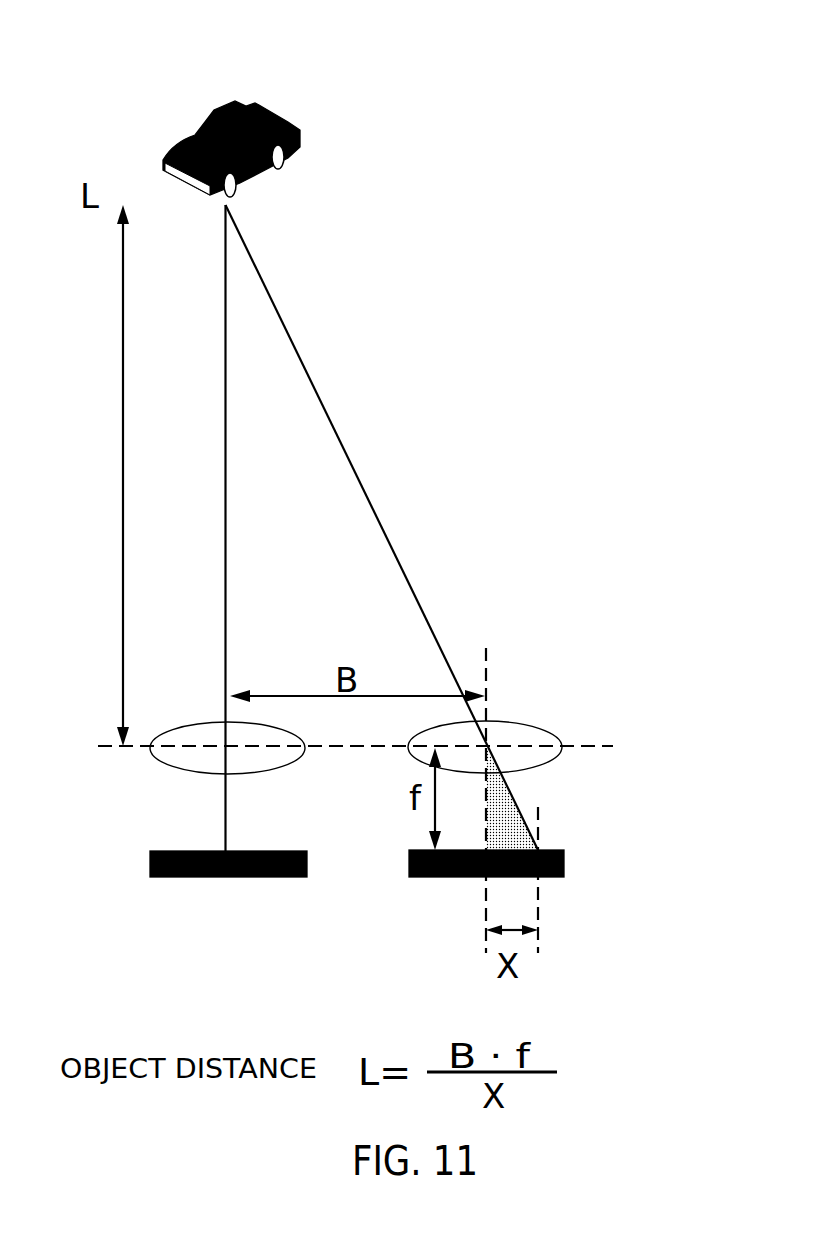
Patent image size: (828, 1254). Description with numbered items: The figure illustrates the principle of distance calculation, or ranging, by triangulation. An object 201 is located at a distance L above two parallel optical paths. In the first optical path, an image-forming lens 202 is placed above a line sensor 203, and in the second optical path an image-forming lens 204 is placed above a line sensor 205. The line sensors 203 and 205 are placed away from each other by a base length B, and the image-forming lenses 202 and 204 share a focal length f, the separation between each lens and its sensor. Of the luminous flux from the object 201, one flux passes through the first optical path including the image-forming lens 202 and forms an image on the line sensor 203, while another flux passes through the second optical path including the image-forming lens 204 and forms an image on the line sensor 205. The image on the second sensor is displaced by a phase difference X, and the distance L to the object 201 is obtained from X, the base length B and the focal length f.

The object 201 is at (300, 113).
The image-forming lens for a first optical path 202 is at (208, 722).
The line sensor for the first optical path 203 is at (205, 850).
The image-forming lens for a second optical path 204 is at (525, 720).
The line sensor for the second optical path 205 is at (553, 850).